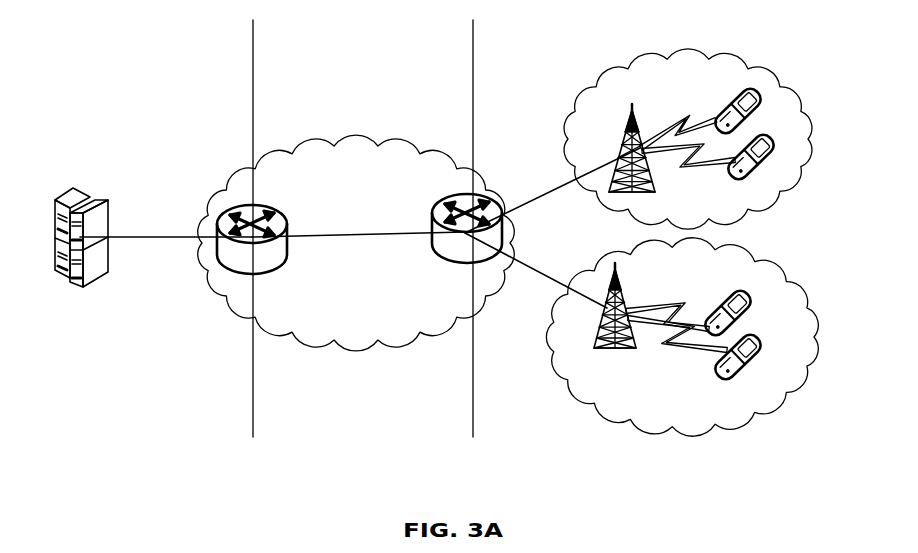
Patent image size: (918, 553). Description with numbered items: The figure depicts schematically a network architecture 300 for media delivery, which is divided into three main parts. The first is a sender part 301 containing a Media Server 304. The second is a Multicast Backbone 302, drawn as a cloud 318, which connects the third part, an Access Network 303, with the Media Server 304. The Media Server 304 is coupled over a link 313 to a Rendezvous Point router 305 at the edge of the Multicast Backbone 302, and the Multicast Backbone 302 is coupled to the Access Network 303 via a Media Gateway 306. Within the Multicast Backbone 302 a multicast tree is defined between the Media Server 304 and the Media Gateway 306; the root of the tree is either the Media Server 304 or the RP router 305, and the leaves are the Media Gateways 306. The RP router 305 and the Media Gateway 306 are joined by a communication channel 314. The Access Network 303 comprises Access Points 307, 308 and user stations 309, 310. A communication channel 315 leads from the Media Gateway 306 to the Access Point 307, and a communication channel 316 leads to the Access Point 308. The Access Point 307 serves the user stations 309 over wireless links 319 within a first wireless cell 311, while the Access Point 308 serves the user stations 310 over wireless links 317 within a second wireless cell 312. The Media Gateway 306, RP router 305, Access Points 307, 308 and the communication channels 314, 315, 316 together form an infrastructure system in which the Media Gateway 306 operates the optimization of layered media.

The communication system 300 is at (198, 392).
The sender part 301 is at (184, 228).
The Multicast Backbone 302 is at (409, 228).
The Access Network 303 is at (683, 31).
The Media Server 304 is at (73, 188).
The Rendezvous Point router 305 is at (222, 272).
The Media Gateway 306 is at (455, 258).
The Access Point 307 is at (627, 117).
The Access Point 308 is at (617, 355).
The user stations 309 is at (768, 137).
The user stations 310 is at (760, 340).
The first wireless network cloud 311 is at (730, 192).
The second wireless network cloud 312 is at (710, 403).
The link between server and first router 313 is at (149, 235).
The communication channel 314 is at (350, 238).
The communication channel 315 is at (557, 188).
The communication channel 316 is at (549, 278).
The wireless links in second cell 317 is at (671, 345).
The core network cloud 318 is at (370, 332).
The wireless links in first cell 319 is at (732, 78).